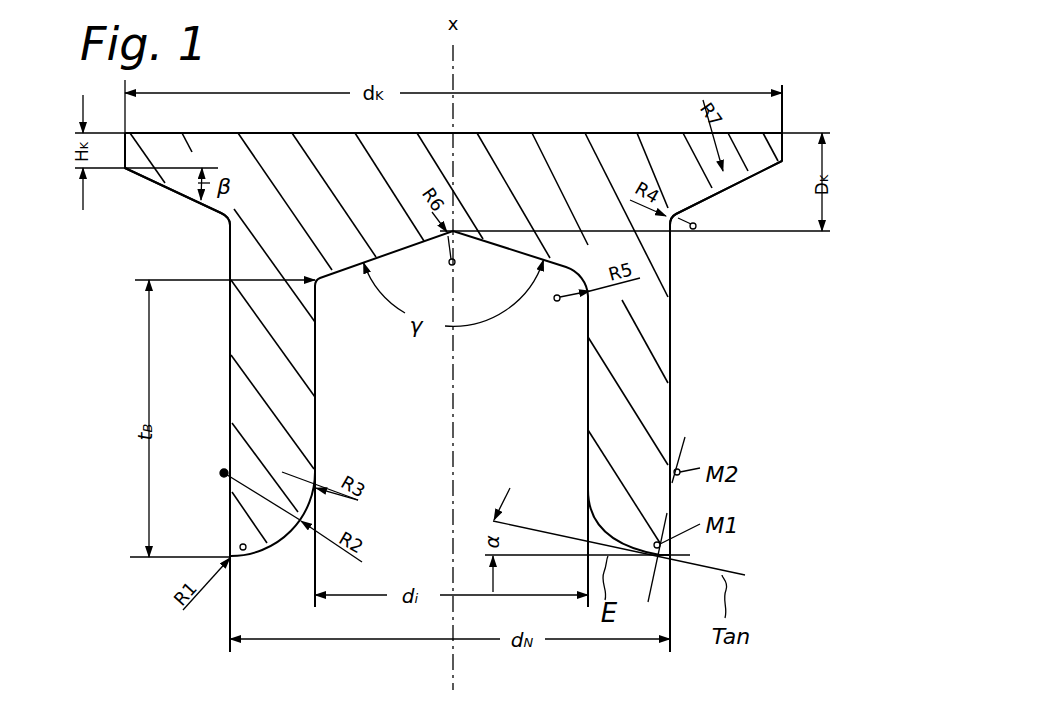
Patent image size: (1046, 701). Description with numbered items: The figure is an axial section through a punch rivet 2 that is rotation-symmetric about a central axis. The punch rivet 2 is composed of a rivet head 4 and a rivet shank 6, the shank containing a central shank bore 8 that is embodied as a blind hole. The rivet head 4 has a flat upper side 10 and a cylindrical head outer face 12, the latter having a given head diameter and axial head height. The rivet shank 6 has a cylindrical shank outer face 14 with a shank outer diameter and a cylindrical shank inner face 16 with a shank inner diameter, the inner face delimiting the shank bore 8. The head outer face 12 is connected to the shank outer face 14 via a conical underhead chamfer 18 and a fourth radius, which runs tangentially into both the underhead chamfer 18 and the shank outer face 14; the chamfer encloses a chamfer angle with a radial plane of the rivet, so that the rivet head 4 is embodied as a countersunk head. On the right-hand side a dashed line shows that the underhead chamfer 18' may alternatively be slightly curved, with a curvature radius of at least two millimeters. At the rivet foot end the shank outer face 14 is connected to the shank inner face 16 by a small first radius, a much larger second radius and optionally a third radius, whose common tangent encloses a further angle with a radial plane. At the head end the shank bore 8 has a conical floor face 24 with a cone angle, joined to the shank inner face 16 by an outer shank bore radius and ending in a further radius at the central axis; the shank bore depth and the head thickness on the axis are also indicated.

The punch rivet 2 is at (646, 75).
The rivet head 4 is at (514, 132).
The rivet shank 6 is at (672, 381).
The shank bore 8 is at (563, 351).
The upper side 10 is at (285, 133).
The head outer face 12 is at (784, 150).
The shank outer face 14 is at (672, 407).
The shank inner face 16 is at (588, 415).
The underhead chamfer 18 is at (168, 218).
The curved underhead chamfer 18' is at (726, 195).
The conical floor face 24 is at (515, 252).